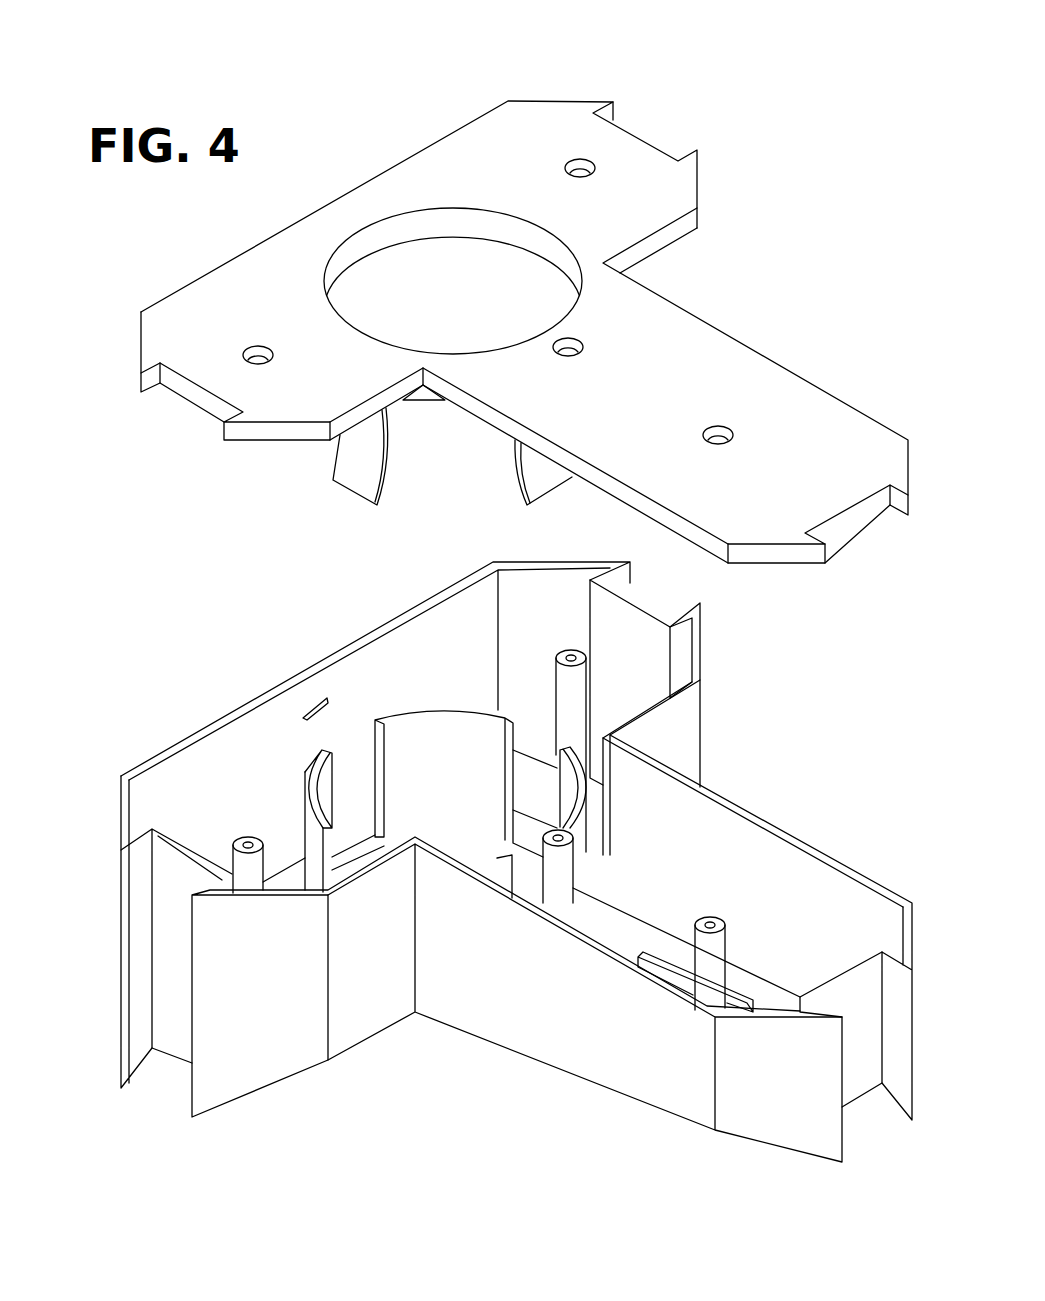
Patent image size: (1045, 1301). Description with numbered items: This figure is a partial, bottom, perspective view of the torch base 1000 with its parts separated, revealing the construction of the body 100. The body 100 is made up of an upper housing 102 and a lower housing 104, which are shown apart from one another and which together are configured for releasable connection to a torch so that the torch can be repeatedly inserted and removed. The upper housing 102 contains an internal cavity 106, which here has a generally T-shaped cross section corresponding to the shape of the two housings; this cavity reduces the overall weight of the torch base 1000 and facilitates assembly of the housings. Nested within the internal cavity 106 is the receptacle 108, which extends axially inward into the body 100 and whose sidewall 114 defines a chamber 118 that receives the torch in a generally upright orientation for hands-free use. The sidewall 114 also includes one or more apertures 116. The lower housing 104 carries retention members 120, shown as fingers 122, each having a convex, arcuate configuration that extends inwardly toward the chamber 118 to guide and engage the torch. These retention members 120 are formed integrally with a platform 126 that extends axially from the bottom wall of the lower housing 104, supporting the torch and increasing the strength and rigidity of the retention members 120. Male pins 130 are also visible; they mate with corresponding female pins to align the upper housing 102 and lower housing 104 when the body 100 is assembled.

The torch base 1000 is at (394, 72).
The body 100 is at (735, 108).
The lower housing 104 is at (762, 255).
The upper housing 102 is at (823, 788).
The internal cavity 106 is at (253, 773).
The receptacle 108 is at (443, 693).
The sidewall 114 is at (475, 773).
The apertures 116 is at (353, 772).
The chamber 118 is at (415, 760).
The retention members 120 is at (335, 460).
The fingers 122 is at (357, 480).
The platform 126 is at (423, 400).
The male pins 130 is at (242, 880).